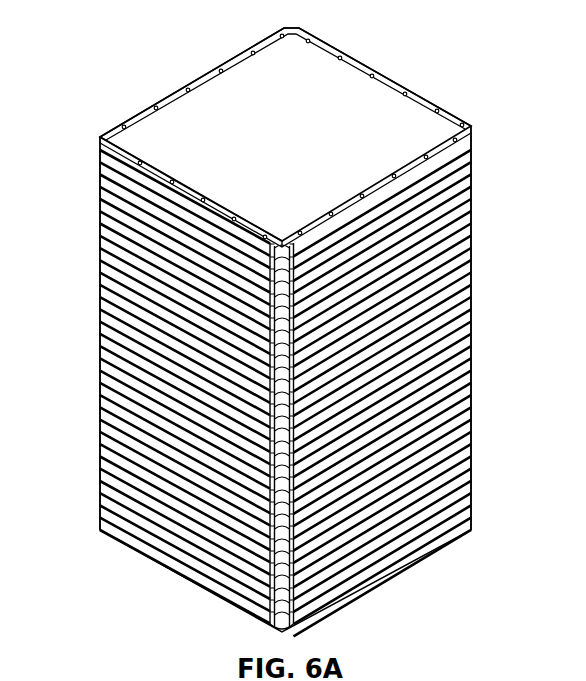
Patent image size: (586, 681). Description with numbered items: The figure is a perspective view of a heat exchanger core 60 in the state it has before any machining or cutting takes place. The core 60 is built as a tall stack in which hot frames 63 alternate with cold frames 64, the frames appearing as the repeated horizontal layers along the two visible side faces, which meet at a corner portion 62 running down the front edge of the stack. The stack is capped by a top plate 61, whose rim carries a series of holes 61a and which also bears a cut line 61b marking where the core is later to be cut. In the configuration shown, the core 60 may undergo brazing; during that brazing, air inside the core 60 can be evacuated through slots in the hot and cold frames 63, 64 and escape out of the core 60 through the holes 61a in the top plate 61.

The heat exchanger core 60 is at (466, 49).
The top plate 61 is at (308, 47).
The holes 61a is at (175, 183).
The cut line 61b is at (133, 160).
The corner portion 62 is at (283, 242).
The hot frames 63 is at (107, 153).
The cold frames 64 is at (107, 165).